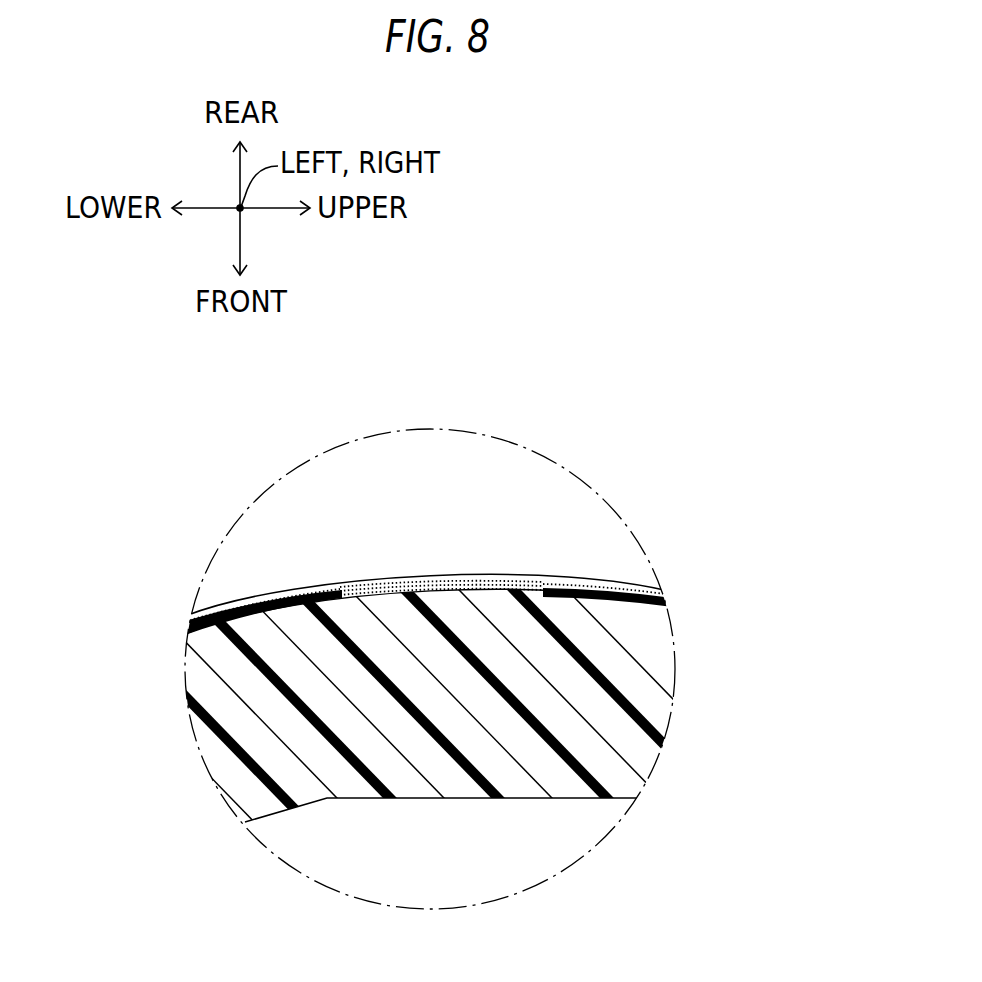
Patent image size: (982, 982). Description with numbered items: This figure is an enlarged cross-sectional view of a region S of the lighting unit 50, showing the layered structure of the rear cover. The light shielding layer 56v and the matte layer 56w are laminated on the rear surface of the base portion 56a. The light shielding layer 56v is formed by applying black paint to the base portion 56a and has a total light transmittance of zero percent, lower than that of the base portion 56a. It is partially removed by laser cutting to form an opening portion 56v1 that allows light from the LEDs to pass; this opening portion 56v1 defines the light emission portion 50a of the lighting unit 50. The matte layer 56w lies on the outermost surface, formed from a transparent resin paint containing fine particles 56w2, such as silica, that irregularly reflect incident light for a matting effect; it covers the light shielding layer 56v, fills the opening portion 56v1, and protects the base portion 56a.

The region S is at (630, 535).
The lighting unit 50 is at (406, 598).
The light emission portion 50a is at (397, 553).
The base portion 56a is at (260, 702).
The matte layer 56w is at (421, 536).
The fine particles 56w2 is at (485, 577).
The light shielding layer 56v is at (572, 598).
The opening portion 56v1 is at (440, 577).